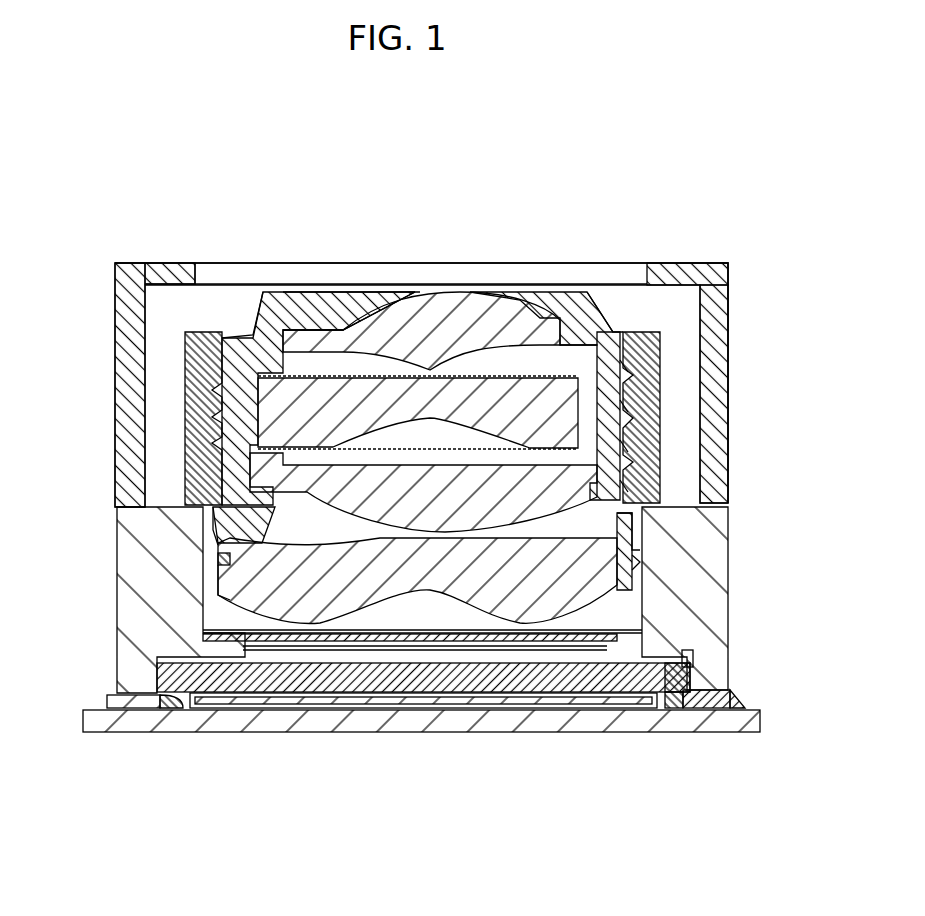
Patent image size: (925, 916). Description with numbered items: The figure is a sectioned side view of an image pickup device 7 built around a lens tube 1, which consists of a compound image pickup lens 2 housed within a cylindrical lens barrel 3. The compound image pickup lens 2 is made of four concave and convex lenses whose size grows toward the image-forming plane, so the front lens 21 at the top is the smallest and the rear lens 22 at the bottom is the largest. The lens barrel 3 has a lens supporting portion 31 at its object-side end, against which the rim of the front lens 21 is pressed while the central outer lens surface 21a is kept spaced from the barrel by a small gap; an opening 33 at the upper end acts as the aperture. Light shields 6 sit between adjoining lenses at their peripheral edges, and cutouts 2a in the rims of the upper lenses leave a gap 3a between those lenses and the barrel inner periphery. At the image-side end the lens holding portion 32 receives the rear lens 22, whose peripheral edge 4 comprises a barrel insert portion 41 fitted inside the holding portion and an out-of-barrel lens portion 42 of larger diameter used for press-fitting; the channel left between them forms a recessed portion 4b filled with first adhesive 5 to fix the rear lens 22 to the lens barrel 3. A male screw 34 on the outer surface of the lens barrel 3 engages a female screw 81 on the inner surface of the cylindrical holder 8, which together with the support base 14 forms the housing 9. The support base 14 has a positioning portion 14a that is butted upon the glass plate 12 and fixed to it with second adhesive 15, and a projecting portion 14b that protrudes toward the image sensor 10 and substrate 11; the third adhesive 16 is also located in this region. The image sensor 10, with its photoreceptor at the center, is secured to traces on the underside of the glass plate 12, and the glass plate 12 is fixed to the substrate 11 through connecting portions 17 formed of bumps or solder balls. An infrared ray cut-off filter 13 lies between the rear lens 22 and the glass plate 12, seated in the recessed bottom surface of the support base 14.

The lens tube 1 is at (405, 192).
The compound image pickup lens 2 is at (423, 377).
The lens barrel 3 is at (528, 300).
The front lens 21 is at (357, 308).
The outer lens surface 21a is at (480, 292).
The cutouts 2a is at (583, 298).
The gap 3a is at (587, 338).
The lens supporting portion 31 is at (322, 292).
The opening 33 is at (371, 312).
The male screw 34 is at (653, 337).
The lens holding portion 32 is at (218, 547).
The peripheral edge 4 is at (55, 593).
The barrel insert portion 41 is at (238, 552).
The out-of-barrel lens portion 42 is at (225, 588).
The recessed portion 4b is at (635, 553).
The first adhesive 5 is at (636, 568).
The light shields 6 is at (655, 496).
The image pickup device 7 is at (568, 232).
The holder 8 is at (728, 337).
The female screw 81 is at (650, 397).
The housing 9 is at (748, 285).
The rear lens 22 is at (608, 592).
The support base 14 is at (692, 615).
The positioning portion 14a is at (690, 652).
The projecting portion 14b is at (700, 685).
The third adhesive 16 is at (735, 702).
The infrared ray cut-off filter 13 is at (483, 641).
The image sensor 10 is at (508, 700).
The substrate 11 is at (550, 722).
The glass plate 12 is at (615, 683).
The second adhesive 15 is at (663, 708).
The connecting portions 17 is at (677, 710).